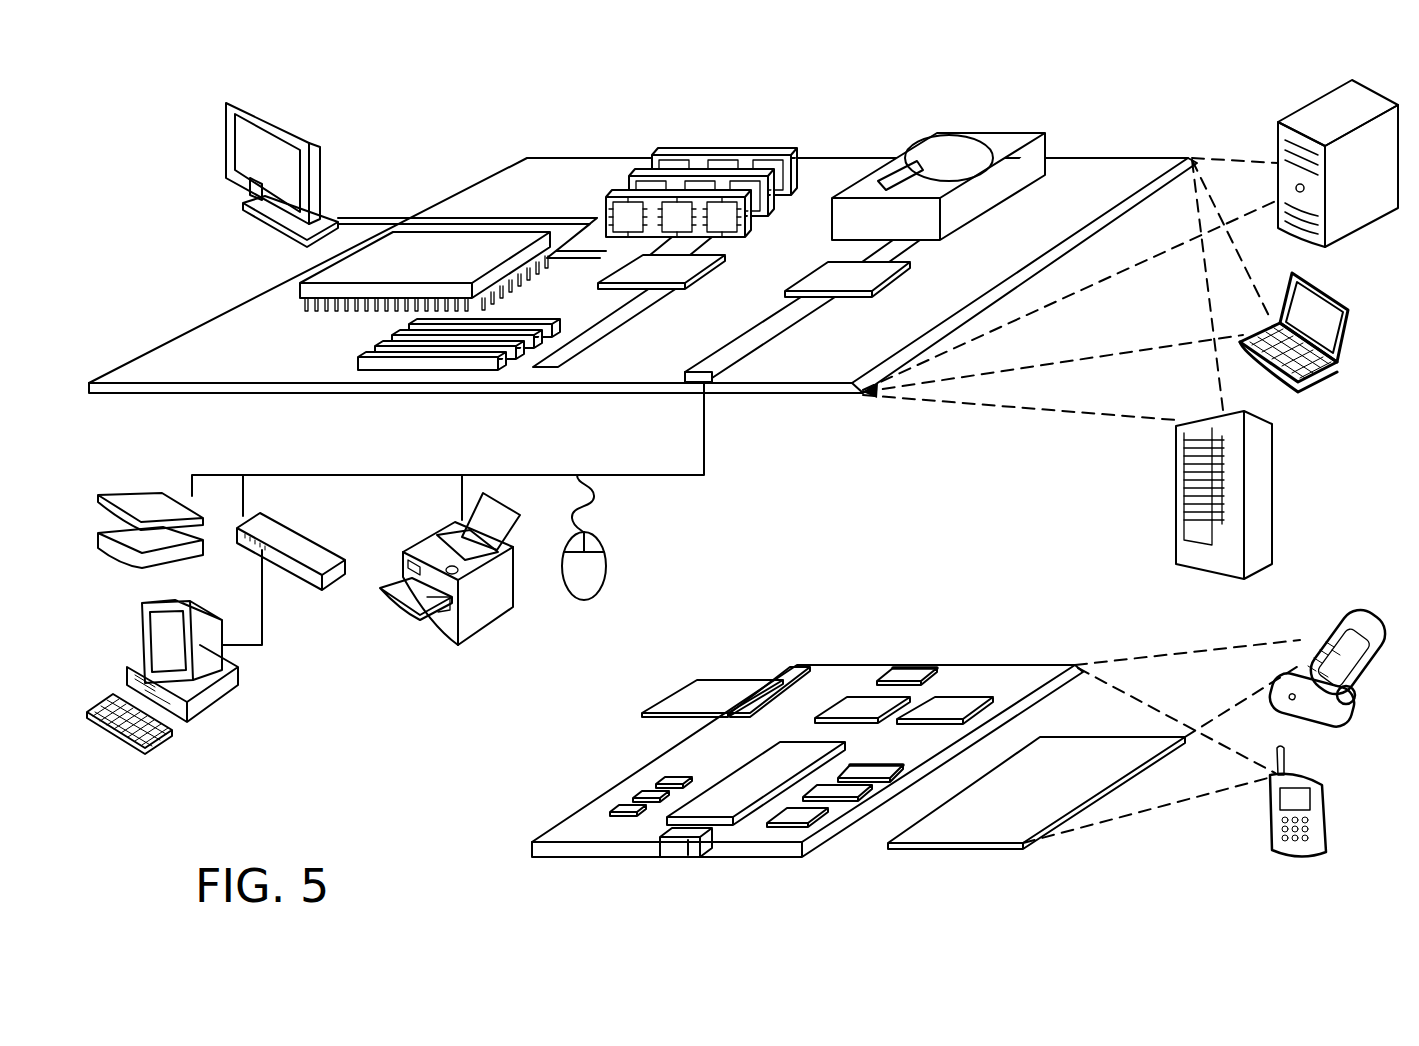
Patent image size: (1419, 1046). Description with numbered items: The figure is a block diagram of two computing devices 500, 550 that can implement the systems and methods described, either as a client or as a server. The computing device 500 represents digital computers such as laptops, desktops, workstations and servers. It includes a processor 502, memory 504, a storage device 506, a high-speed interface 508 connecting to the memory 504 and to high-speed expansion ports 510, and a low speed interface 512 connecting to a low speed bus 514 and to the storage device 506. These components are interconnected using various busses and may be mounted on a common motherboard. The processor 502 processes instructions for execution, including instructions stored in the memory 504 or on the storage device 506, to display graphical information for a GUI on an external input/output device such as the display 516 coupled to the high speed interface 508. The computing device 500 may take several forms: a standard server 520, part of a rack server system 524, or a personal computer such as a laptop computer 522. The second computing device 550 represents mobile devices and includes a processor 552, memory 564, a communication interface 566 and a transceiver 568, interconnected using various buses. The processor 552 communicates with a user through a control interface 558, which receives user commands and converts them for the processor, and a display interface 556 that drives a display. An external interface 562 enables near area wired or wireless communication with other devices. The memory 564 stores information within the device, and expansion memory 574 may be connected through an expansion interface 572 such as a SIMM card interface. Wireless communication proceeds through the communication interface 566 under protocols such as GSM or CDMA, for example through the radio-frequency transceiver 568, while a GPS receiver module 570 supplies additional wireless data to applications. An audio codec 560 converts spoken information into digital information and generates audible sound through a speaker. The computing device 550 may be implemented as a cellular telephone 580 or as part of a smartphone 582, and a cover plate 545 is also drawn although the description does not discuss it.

The computing device 500 is at (441, 128).
The processor 502 is at (308, 283).
The memory 504 is at (668, 152).
The storage device 506 is at (926, 142).
The high-speed interface 508 is at (637, 270).
The high-speed expansion ports 510 is at (360, 350).
The low speed interface 512 is at (828, 273).
The low speed bus 514 is at (712, 382).
The display 516 is at (225, 102).
The standard server 520 is at (1278, 142).
The laptop computer 522 is at (1352, 310).
The rack server system 524 is at (1176, 519).
The cover plate 545 is at (990, 828).
The computing device 550 is at (497, 857).
The processor 552 is at (728, 808).
The display interface 556 is at (802, 822).
The control interface 558 is at (860, 805).
The audio codec 560 is at (862, 775).
The external interface 562 is at (687, 840).
The memory 564 is at (628, 803).
The communication interface 566 is at (860, 705).
The transceiver 568 is at (946, 706).
The GPS receiver module 570 is at (917, 665).
The expansion interface 572 is at (782, 672).
The expansion memory 574 is at (697, 680).
The cellular telephone 580 is at (1330, 624).
The smartphone 582 is at (1264, 810).